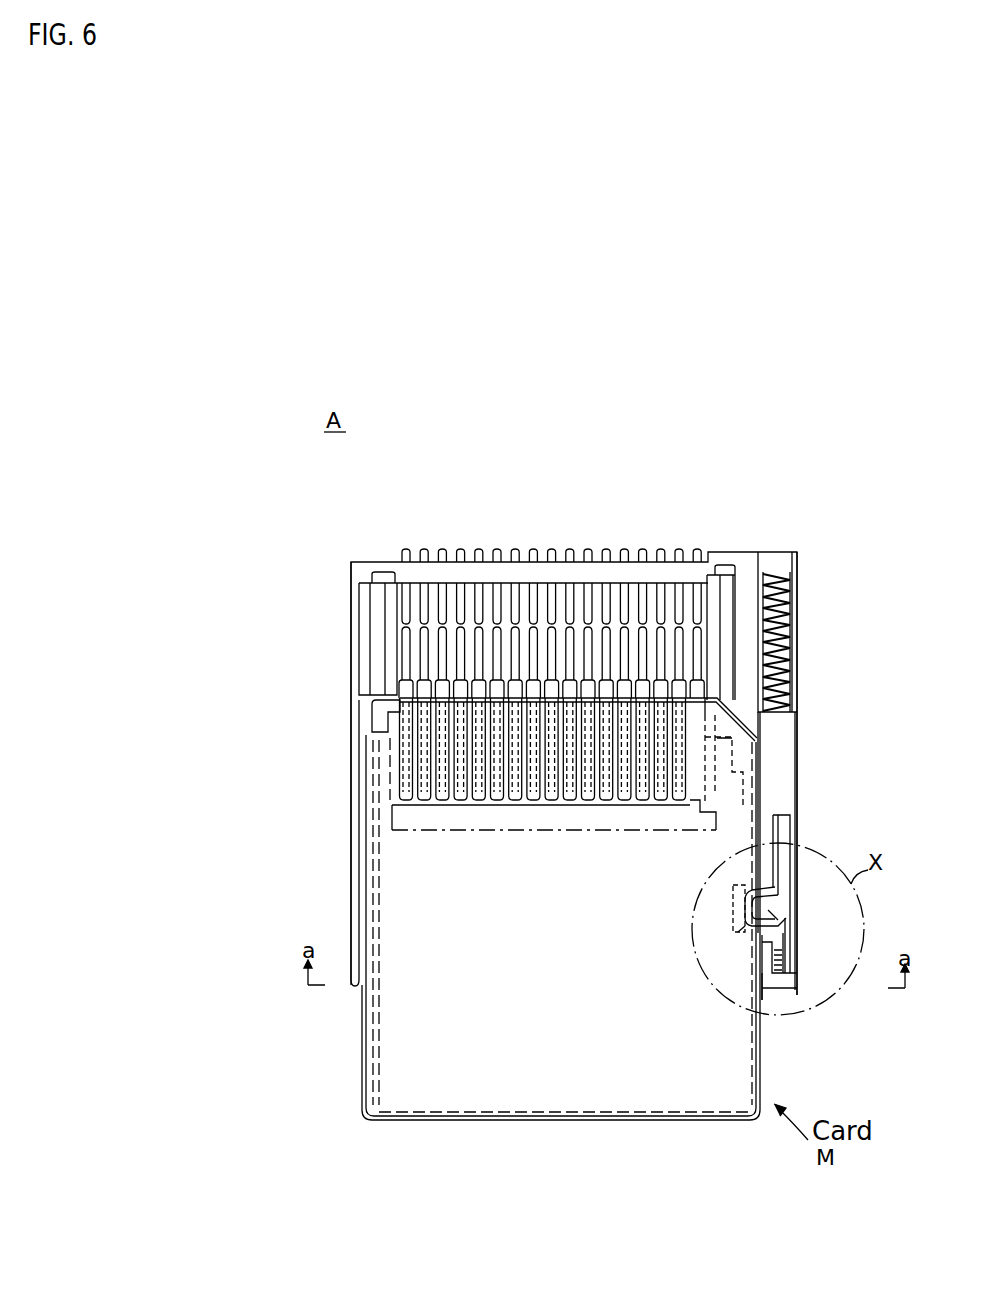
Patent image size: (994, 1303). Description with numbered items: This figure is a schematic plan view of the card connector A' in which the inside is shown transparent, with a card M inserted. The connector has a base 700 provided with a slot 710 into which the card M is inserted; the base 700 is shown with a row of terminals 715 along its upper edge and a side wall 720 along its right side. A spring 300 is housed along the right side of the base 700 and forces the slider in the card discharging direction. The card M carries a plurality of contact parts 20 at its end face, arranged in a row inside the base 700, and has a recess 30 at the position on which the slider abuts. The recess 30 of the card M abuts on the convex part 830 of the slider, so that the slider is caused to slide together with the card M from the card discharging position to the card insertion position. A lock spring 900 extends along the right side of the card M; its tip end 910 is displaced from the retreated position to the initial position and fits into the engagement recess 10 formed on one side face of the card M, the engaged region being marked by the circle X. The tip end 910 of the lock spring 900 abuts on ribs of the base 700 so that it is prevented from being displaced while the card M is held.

The base 700 is at (348, 552).
The solder terminals 715 is at (702, 551).
The slot 710 is at (360, 987).
The spring 300 is at (797, 605).
The contact parts 20 is at (527, 805).
The recess 30 is at (570, 818).
The convex part 830 is at (745, 747).
The housing side wall 720 is at (800, 780).
The lock spring 900 is at (795, 822).
The engagement recess 10 is at (733, 905).
The tip end 910 is at (738, 932).